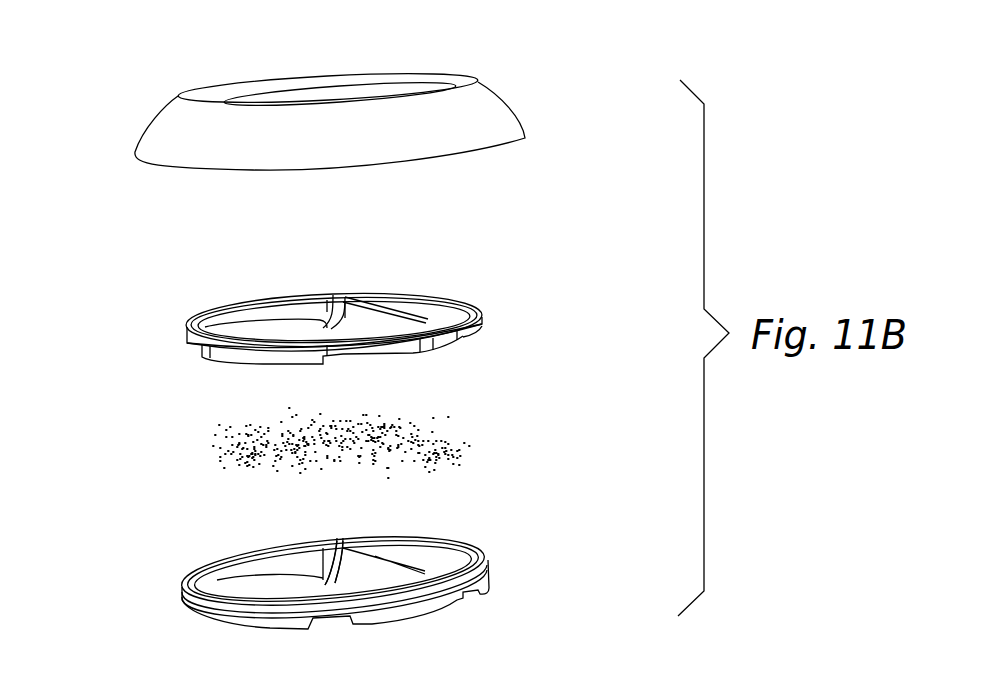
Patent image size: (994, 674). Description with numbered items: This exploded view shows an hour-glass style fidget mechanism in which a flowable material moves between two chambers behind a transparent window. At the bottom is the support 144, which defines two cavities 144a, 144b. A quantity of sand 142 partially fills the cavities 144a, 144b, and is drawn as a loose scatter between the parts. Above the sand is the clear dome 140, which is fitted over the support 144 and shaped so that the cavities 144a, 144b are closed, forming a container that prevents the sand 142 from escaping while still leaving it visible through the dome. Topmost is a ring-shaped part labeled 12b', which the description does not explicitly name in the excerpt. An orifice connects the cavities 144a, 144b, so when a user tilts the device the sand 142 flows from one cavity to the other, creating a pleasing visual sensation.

The cap 12b' is at (397, 85).
The clear dome 140 is at (432, 308).
The sand 142 is at (405, 438).
The support 144 is at (348, 547).
The cavity 144a is at (408, 548).
The cavity 144b is at (242, 562).